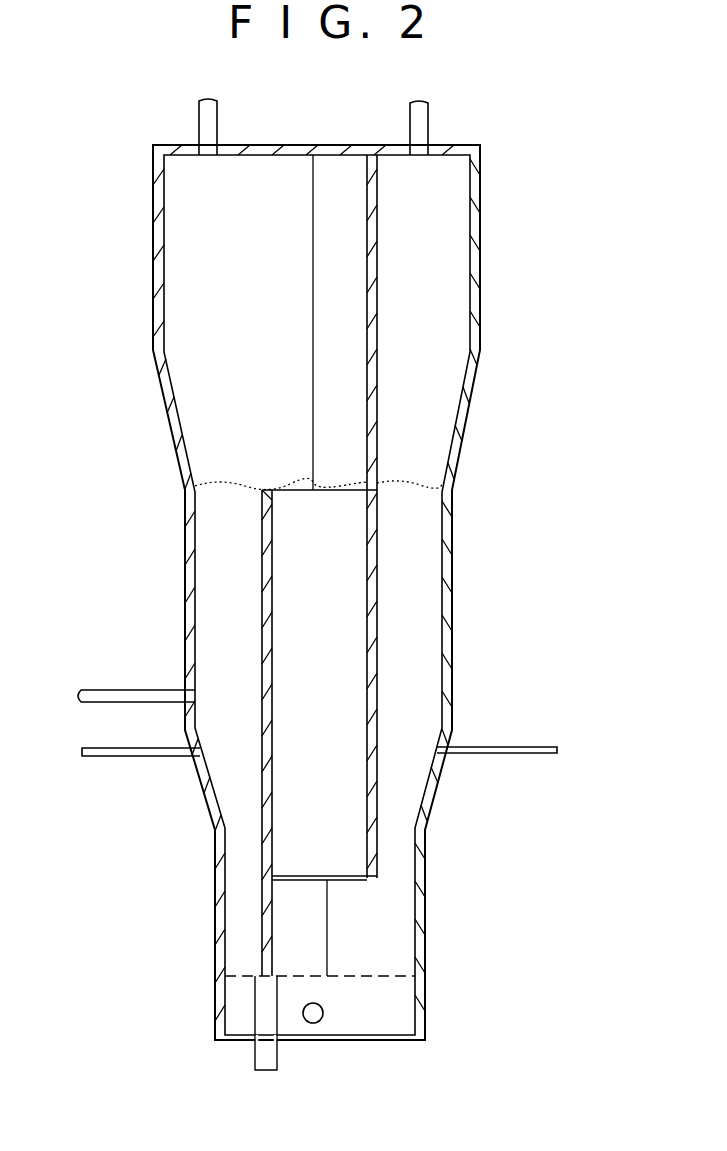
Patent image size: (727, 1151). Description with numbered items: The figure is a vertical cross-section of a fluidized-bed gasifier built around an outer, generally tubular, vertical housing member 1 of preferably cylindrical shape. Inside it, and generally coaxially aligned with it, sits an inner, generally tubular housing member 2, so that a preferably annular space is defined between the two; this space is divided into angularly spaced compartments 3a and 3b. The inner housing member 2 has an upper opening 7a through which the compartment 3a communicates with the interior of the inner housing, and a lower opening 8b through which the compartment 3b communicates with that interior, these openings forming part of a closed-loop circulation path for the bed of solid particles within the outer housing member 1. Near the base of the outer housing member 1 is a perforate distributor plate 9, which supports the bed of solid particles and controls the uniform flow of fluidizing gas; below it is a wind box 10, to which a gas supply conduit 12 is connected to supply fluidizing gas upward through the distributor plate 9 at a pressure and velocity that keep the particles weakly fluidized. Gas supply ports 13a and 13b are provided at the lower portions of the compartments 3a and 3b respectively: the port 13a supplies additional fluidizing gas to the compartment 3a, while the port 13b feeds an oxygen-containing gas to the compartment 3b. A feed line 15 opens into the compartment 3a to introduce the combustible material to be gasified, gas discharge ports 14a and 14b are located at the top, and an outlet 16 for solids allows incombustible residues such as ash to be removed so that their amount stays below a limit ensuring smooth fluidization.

The outer housing member 1 is at (462, 440).
The inner housing member 2 is at (262, 538).
The compartment 3a is at (223, 636).
The compartment 3b is at (400, 632).
The upper opening 7a is at (293, 478).
The lower opening 8b is at (356, 902).
The perforate distributor plate 9 is at (340, 978).
The wind box 10 is at (240, 1005).
The gas supply conduit 12 is at (313, 1024).
The gas supply port 13a is at (125, 758).
The gas supply port 13b is at (513, 745).
The gas discharge port 14a is at (217, 128).
The gas discharge port 14b is at (428, 128).
The feed line 15 is at (113, 690).
The outlet for solids 16 is at (255, 1050).